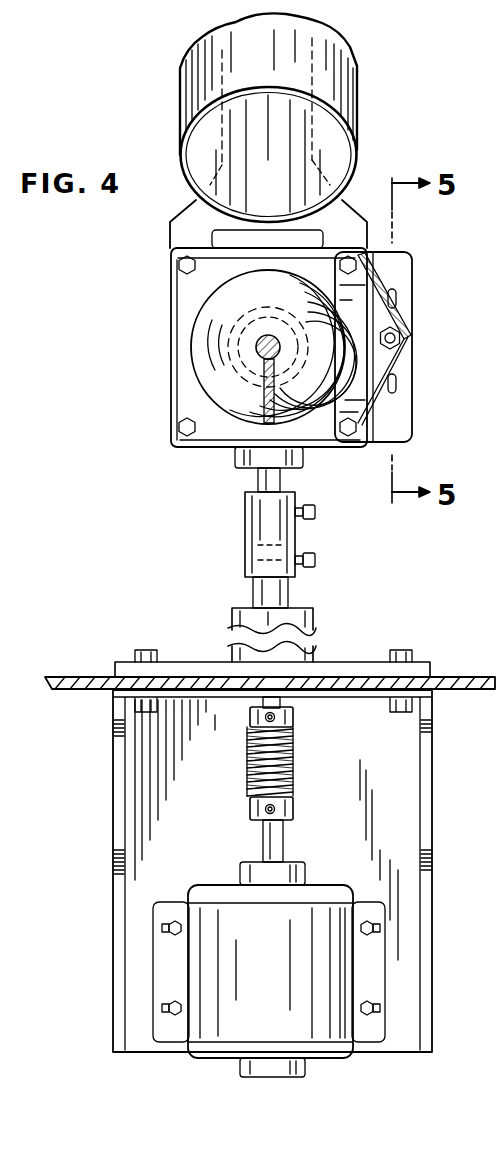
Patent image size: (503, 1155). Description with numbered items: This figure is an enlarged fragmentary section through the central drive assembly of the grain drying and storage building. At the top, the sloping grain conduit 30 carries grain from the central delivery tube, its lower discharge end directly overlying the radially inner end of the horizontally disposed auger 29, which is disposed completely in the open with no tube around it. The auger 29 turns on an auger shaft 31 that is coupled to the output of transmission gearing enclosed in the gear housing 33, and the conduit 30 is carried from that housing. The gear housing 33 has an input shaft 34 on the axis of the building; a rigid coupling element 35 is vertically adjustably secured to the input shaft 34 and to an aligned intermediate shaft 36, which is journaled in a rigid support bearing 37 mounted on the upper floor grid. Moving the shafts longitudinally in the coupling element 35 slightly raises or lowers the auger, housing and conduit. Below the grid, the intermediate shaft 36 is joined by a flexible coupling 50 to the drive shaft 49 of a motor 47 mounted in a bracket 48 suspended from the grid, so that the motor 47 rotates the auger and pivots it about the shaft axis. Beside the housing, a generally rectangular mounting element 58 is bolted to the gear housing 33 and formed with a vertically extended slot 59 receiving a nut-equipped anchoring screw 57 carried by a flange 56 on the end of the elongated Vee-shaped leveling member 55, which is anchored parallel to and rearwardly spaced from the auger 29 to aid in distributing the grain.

The conduit 30 is at (178, 93).
The gear housing 33 is at (170, 407).
The auger 29 is at (195, 347).
The auger shaft 31 is at (268, 335).
The mounting element 58 is at (397, 278).
The leveling member 55 is at (377, 277).
The flange 56 is at (380, 313).
The anchoring screw 57 is at (402, 333).
The slot 59 is at (395, 381).
The input shaft 34 is at (258, 482).
The coupling element 35 is at (245, 532).
The intermediate shaft 36 is at (253, 590).
The support bearing 37 is at (232, 652).
The bracket 48 is at (113, 879).
The flexible coupling 50 is at (293, 778).
The drive shaft 49 is at (283, 843).
The motor 47 is at (330, 912).